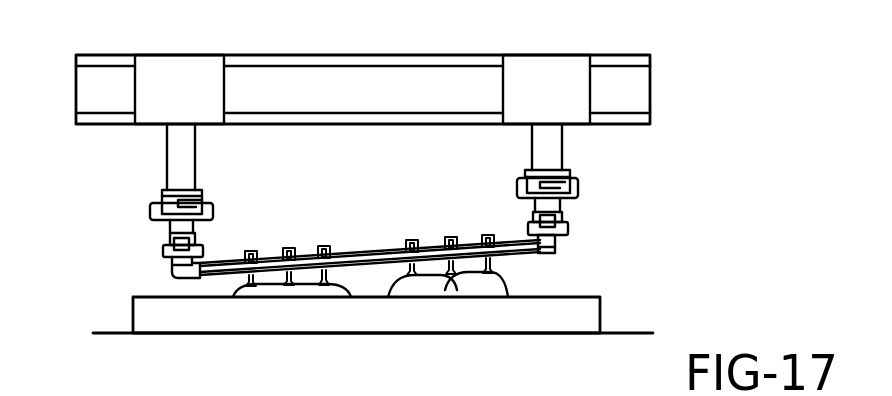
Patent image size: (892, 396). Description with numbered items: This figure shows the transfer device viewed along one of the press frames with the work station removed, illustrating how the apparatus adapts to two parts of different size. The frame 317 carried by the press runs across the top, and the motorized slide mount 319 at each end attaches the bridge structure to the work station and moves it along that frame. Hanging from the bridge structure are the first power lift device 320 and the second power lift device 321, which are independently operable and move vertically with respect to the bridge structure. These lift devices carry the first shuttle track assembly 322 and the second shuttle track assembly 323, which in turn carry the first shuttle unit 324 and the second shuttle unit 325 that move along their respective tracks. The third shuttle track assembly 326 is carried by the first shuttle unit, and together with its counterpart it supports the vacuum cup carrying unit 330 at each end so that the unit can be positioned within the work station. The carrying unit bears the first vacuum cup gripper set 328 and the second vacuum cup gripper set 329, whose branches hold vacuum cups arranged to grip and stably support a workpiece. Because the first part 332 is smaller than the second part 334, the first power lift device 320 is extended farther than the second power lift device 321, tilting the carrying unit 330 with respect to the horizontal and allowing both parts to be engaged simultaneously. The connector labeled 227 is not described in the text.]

The frame 317 is at (290, 60).
The motorized slide mount 319 is at (164, 62).
The first power lift device 320 is at (187, 157).
The second power lift device 321 is at (565, 150).
The first shuttle track assembly 322 is at (194, 200).
The second shuttle track assembly 323 is at (583, 178).
The first shuttle unit 324 is at (167, 237).
The second shuttle unit 325 is at (565, 212).
The third shuttle track assembly 326 is at (165, 251).
The connector 227 is at (567, 230).
The first vacuum cup gripper set 328 is at (302, 235).
The second vacuum cup gripper set 329 is at (442, 255).
The vacuum cup carrying unit 330 is at (343, 250).
The first part 332 is at (275, 292).
The second part 334 is at (457, 288).